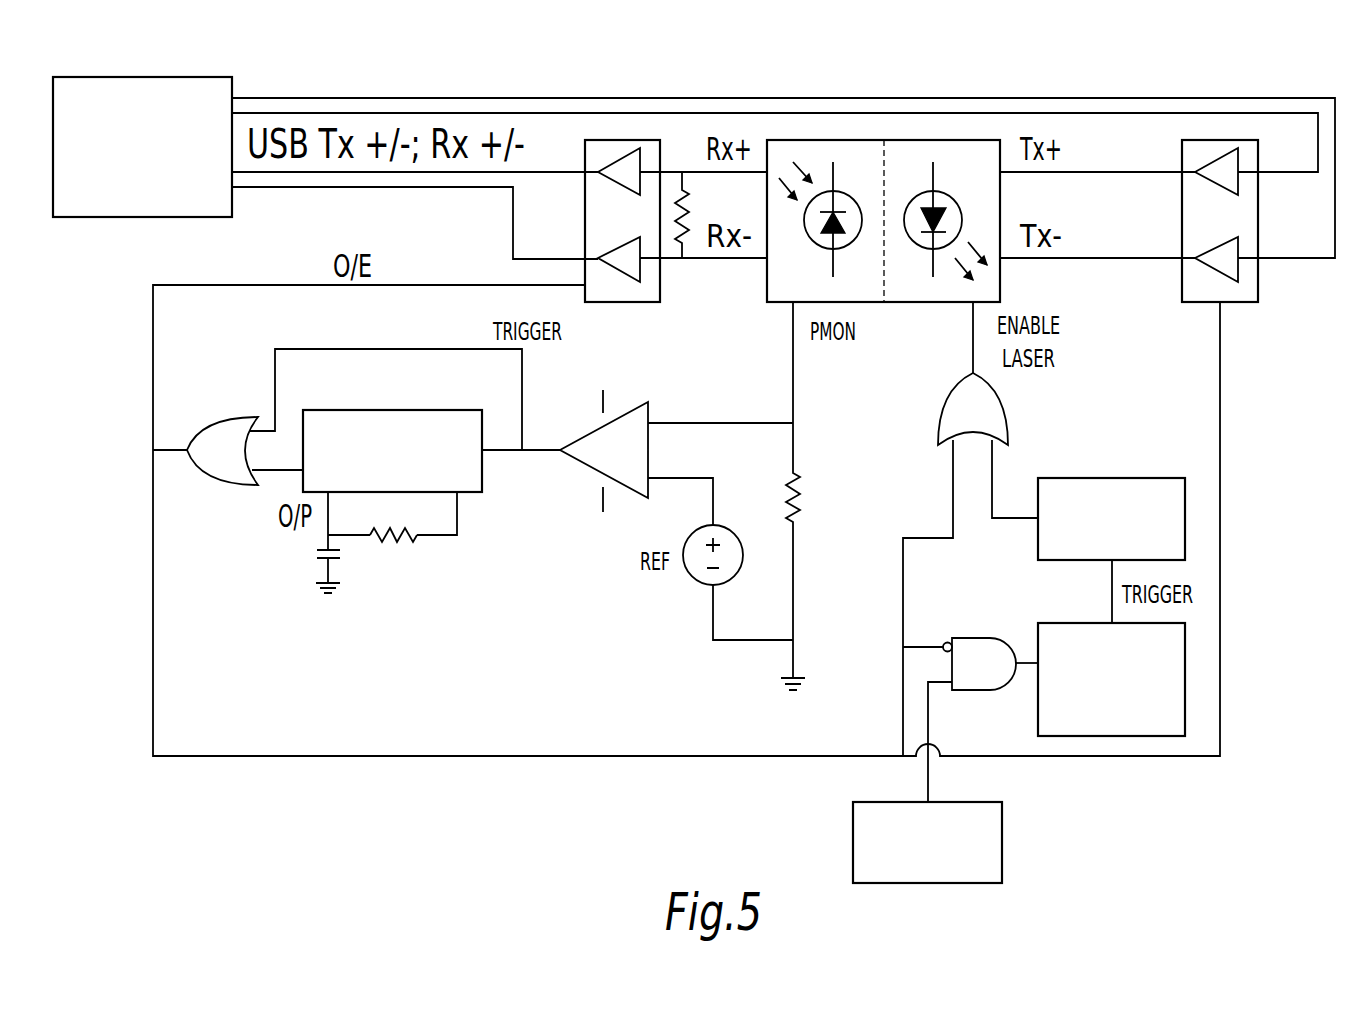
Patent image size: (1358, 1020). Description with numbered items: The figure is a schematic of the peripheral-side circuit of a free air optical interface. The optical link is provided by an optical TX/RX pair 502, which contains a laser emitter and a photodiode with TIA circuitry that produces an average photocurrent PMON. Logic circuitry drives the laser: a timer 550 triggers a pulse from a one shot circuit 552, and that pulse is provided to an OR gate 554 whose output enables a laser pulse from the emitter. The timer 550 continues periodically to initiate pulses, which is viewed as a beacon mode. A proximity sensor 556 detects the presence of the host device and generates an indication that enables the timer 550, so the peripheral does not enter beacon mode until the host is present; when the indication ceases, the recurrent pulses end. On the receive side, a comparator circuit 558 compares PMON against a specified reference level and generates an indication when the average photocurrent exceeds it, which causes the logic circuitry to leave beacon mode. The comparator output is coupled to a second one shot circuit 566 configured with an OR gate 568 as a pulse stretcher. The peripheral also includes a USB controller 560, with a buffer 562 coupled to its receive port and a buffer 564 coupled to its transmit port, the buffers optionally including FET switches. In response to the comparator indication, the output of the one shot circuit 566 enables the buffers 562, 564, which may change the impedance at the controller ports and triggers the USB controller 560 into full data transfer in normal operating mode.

The USB controller 560 is at (145, 77).
The buffer 562 is at (622, 140).
The optical TX/RX pair 502 is at (965, 140).
The buffer 564 is at (1218, 140).
The second one shot circuit 566 is at (391, 410).
The OR gate 568 is at (222, 420).
The comparator circuit 558 is at (651, 450).
The OR gate 554 is at (1003, 400).
The one shot circuit 552 is at (1110, 478).
The timer 550 is at (1185, 648).
The proximity sensor 556 is at (1003, 822).